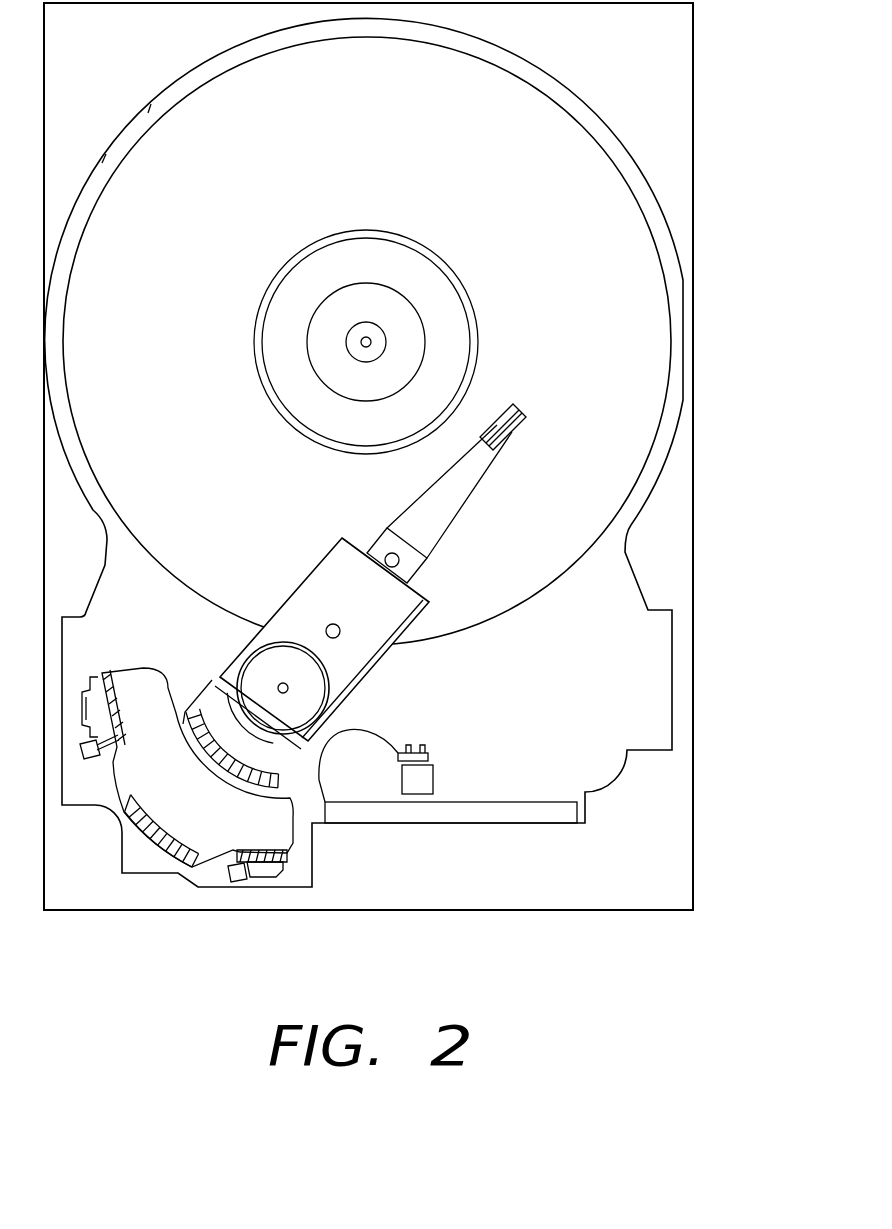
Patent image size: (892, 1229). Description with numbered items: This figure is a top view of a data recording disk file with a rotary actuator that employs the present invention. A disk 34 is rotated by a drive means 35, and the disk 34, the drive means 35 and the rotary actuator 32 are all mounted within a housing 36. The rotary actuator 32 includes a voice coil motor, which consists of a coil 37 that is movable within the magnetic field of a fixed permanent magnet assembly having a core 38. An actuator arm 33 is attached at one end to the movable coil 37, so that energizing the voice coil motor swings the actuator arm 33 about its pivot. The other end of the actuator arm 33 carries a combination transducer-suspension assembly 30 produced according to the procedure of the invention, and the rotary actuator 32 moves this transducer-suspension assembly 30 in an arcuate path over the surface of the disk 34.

The transducer-suspension assembly 30 is at (387, 596).
The rotary actuator 32 is at (364, 711).
The actuator arm 33 is at (372, 650).
The disk 34 is at (637, 250).
The drive means 35 is at (345, 430).
The housing 36 is at (678, 698).
The coil 37 is at (171, 860).
The core 38 is at (170, 812).